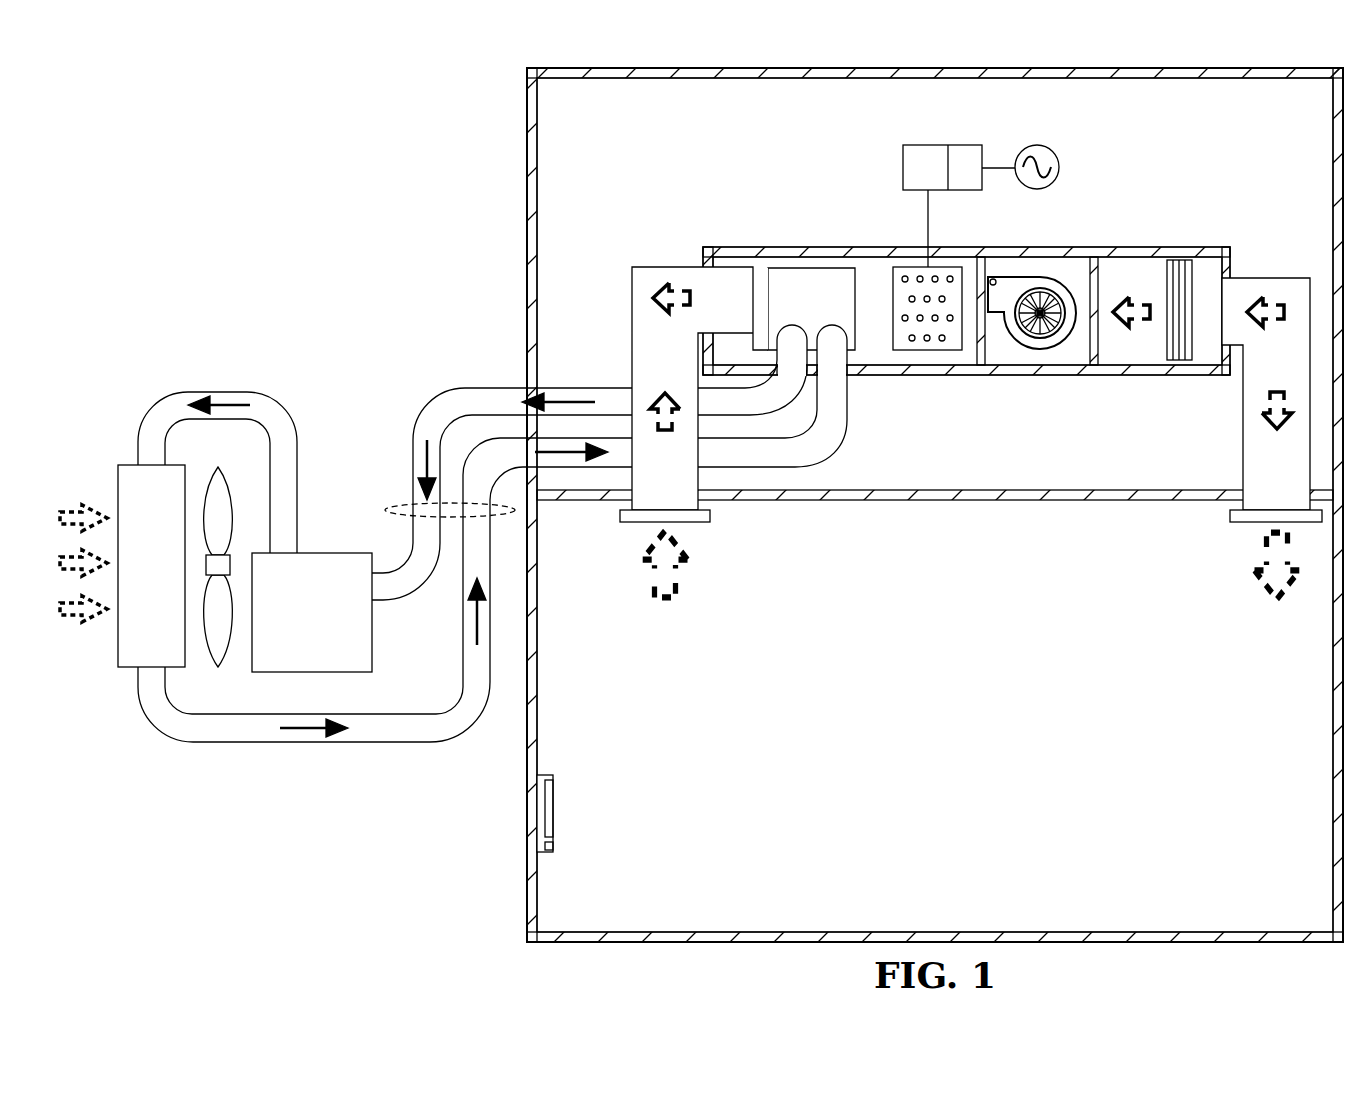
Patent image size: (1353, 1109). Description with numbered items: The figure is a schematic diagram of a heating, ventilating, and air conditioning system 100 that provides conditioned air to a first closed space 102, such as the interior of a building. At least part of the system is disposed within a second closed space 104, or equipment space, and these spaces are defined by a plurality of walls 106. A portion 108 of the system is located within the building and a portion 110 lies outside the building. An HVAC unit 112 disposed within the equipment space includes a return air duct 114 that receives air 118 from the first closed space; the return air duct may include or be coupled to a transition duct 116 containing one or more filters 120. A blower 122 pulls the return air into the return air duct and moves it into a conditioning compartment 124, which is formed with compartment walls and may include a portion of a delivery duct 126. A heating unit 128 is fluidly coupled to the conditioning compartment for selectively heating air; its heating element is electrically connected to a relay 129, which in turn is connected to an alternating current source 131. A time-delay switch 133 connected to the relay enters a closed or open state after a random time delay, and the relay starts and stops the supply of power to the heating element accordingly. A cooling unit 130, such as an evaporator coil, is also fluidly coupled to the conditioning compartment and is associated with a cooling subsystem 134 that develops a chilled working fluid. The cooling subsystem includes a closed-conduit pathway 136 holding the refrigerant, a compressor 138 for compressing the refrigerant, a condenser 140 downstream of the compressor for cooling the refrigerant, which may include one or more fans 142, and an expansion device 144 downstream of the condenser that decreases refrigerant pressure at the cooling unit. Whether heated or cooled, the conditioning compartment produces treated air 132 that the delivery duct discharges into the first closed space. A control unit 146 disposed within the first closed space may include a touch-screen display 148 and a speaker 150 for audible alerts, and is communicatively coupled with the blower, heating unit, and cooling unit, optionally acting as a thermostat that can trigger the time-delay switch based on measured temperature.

The HVAC system 100 is at (966, 264).
The first closed space 102 is at (915, 729).
The second closed space 104 is at (565, 344).
The walls 106 is at (1333, 757).
The portion of the system located within the building 108 is at (1041, 314).
The portion outside the building 110 is at (453, 504).
The HVAC unit 112 is at (946, 376).
The return air duct 114 is at (1265, 278).
The transition duct 116 is at (1168, 278).
The air 118 is at (1272, 600).
The filters 120 is at (1185, 268).
The blower 122 is at (1070, 264).
The conditioning compartment 124 is at (916, 375).
The delivery duct 126 is at (697, 522).
The heating unit 128 is at (906, 268).
The relay 129 is at (925, 153).
The cooling unit 130 is at (804, 276).
The alternating current source 131 is at (1050, 152).
The treated air 132 is at (665, 600).
The time-delay switch 133 is at (965, 153).
The cooling subsystem 134 is at (168, 395).
The closed-conduit pathway 136 is at (218, 390).
The compressor 138 is at (292, 626).
The condenser 140 is at (130, 582).
The fans 142 is at (222, 468).
The expansion device 144 is at (832, 322).
The control unit 146 is at (581, 805).
The touch-screen display 148 is at (557, 805).
The speaker 150 is at (556, 848).